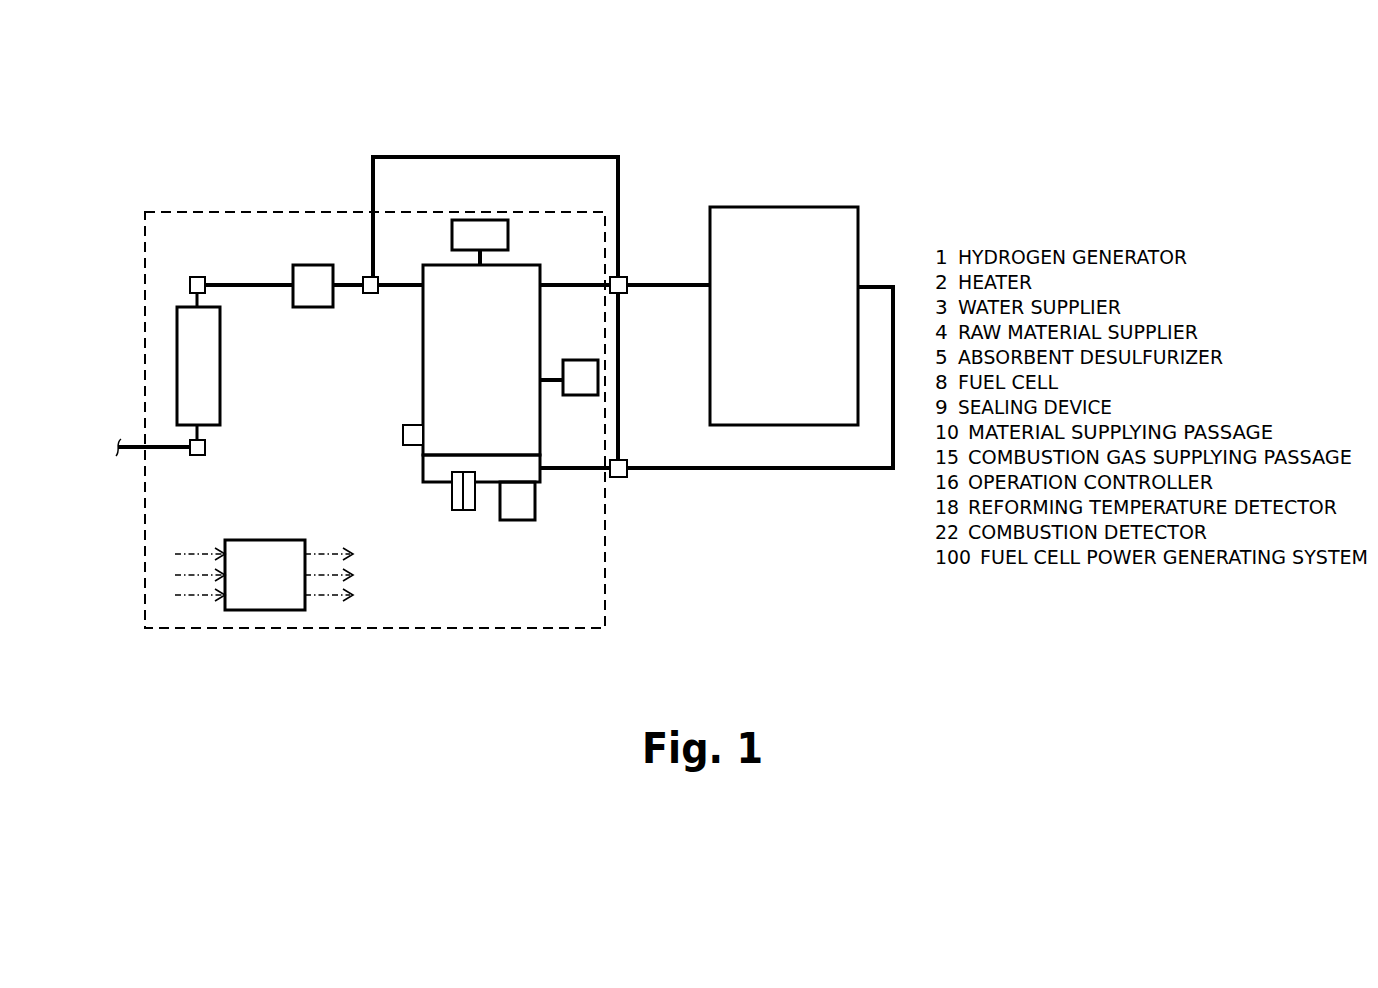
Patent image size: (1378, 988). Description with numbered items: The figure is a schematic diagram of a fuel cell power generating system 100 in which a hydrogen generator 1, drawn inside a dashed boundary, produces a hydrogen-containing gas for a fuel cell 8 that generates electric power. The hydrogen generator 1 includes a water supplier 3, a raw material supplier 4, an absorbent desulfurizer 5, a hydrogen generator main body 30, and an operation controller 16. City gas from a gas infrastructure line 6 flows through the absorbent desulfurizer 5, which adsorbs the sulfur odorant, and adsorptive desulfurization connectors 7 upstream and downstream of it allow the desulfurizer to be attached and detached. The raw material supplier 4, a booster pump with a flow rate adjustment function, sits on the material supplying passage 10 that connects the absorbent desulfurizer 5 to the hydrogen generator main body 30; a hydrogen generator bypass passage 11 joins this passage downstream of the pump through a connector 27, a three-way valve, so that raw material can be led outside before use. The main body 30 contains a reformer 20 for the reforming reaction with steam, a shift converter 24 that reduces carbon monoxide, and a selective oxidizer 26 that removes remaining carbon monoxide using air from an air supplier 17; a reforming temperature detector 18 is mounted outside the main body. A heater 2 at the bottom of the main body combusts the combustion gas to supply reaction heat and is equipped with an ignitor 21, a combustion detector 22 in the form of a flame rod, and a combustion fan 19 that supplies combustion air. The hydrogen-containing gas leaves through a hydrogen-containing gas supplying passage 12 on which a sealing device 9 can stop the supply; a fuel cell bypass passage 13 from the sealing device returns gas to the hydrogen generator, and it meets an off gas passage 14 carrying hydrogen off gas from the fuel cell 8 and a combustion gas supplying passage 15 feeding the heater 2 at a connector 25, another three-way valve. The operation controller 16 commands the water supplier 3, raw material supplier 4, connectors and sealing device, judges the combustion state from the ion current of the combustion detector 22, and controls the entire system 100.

The hydrogen generator 1 is at (190, 210).
The heater 2 is at (422, 465).
The water supplier 3 is at (500, 240).
The raw material supplier 4 is at (310, 280).
The absorbent desulfurizer 5 is at (187, 390).
The gas infrastructure line 6 is at (160, 448).
The adsorptive desulfurization connector 7 is at (188, 443).
The fuel cell 8 is at (820, 268).
The sealing device 9 is at (625, 278).
The material supplying passage 10 is at (402, 288).
The hydrogen generator bypass passage 11 is at (370, 198).
The hydrogen-containing gas supplying passage 12 is at (690, 292).
The fuel cell bypass passage 13 is at (618, 367).
The off gas passage 14 is at (775, 472).
The combustion gas supplying passage 15 is at (583, 472).
The operation controller 16 is at (265, 542).
The air supplier 17 is at (590, 390).
The reforming temperature detector 18 is at (410, 425).
The combustion fan 19 is at (520, 512).
The reformer 20 is at (635, 309).
The ignitor 21 is at (458, 492).
The combustion detector 22 is at (470, 493).
The shift converter 24 is at (635, 309).
The connector 25 is at (625, 475).
The selective oxidizer 26 is at (542, 267).
The connector 27 is at (373, 280).
The hydrogen generator main body 30 is at (635, 309).
The fuel cell power generating system 100 is at (138, 171).